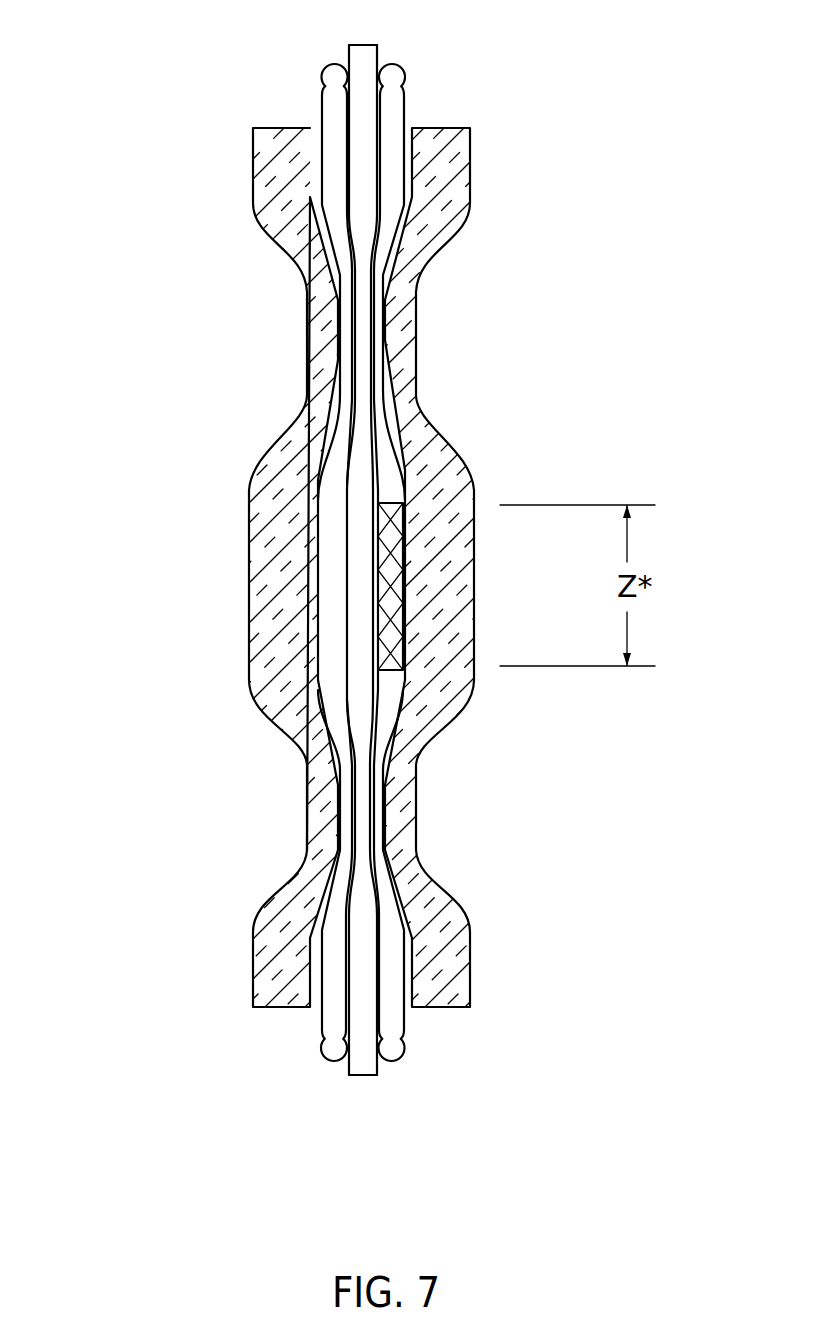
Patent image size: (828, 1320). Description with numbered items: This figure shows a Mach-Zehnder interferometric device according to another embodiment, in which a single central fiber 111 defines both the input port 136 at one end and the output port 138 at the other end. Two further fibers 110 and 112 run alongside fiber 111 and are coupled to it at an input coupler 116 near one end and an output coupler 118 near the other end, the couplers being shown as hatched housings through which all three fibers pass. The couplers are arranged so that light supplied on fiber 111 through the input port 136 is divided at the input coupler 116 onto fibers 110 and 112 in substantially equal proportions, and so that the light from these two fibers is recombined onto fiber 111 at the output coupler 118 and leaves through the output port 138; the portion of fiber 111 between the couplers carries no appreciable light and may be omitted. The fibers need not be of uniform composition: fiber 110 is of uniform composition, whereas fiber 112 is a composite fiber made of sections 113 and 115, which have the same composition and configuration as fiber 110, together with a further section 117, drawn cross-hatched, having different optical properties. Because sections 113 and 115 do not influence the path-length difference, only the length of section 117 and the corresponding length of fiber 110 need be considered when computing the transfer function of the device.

The fiber 110 is at (238, 562).
The fiber 111 is at (262, 560).
The fiber 112 is at (471, 732).
The section 113 is at (478, 283).
The section 115 is at (452, 865).
The input coupler 116 is at (233, 807).
The section 117 is at (283, 587).
The output coupler 118 is at (414, 600).
The input port 136 is at (429, 1107).
The output port 138 is at (429, 28).